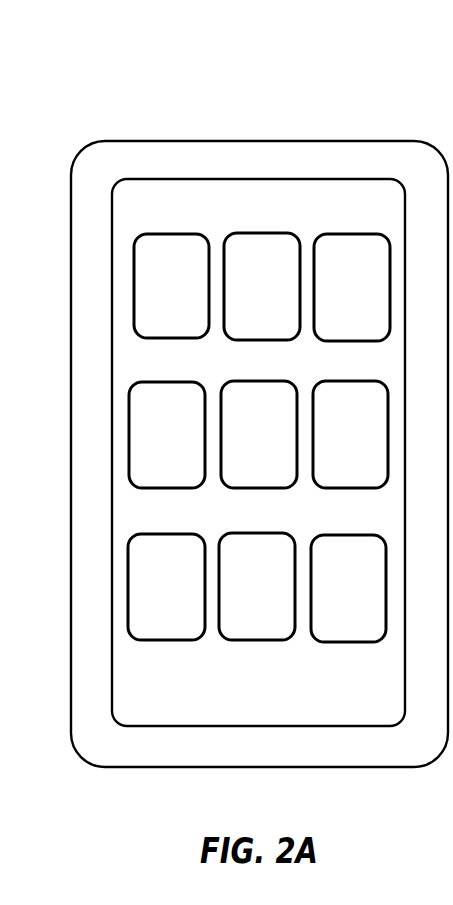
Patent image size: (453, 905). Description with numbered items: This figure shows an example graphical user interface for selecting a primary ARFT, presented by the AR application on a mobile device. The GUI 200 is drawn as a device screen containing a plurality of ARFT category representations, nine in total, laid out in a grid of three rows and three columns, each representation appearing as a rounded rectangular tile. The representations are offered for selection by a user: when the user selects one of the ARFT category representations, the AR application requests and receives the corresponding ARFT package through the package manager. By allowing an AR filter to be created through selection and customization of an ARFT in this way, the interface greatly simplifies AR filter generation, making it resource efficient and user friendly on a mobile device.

The GUI 200 is at (158, 85).